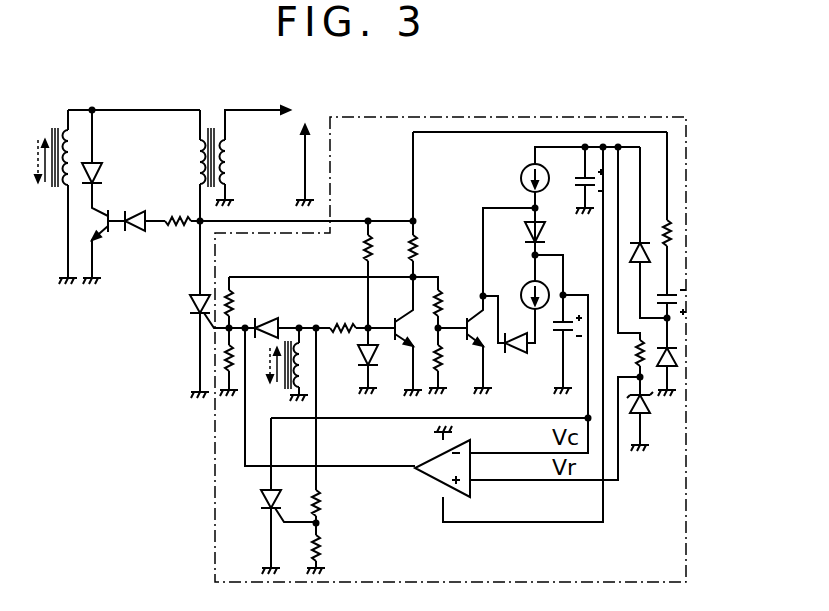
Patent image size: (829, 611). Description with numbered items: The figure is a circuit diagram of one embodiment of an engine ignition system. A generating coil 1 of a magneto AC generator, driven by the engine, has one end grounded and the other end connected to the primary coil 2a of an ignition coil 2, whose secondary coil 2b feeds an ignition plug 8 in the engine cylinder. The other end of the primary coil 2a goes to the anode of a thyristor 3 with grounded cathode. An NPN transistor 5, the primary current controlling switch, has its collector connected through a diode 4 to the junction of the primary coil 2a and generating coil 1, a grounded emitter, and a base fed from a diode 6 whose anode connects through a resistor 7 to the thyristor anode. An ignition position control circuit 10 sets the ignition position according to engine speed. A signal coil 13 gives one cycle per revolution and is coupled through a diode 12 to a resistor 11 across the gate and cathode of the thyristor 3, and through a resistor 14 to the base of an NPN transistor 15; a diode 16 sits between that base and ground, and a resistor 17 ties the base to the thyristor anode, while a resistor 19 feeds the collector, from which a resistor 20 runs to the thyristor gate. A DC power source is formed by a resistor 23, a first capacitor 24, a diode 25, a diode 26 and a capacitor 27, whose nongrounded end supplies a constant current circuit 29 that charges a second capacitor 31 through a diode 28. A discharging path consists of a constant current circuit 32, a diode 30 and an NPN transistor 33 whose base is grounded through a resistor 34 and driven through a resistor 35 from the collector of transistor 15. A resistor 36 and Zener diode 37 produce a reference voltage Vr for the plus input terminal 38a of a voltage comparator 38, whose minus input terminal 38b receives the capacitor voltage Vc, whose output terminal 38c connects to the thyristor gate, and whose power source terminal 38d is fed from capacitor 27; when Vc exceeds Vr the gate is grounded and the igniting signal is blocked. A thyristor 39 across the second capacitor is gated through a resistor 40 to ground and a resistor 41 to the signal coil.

The generating coil 1 is at (60, 130).
The ignition coil 2 is at (213, 136).
The primary coil 2a is at (200, 157).
The secondary coil 2b is at (232, 165).
The thyristor 3 is at (193, 300).
The diode 4 is at (102, 172).
The NPN transistor 5 is at (104, 212).
The diode 6 is at (134, 228).
The resistor 7 is at (176, 226).
The ignition plug 8 is at (305, 118).
The ignition position control circuit 10 is at (686, 492).
The resistor 11 is at (224, 362).
The diode 12 is at (278, 324).
The signal coil 13 is at (297, 385).
The resistor 14 is at (343, 322).
The NPN transistor 15 is at (405, 312).
The diode 16 is at (362, 360).
The resistor 17 is at (360, 240).
The resistor 19 is at (421, 246).
The resistor 20 is at (235, 302).
The resistor 23 is at (675, 230).
The first capacitor 24 is at (684, 300).
The diode 25 is at (677, 360).
The diode 26 is at (650, 254).
The capacitor 27 is at (555, 212).
The diode 28 is at (547, 234).
The constant current circuit 29 is at (522, 172).
The diode 30 is at (518, 338).
The second capacitor 31 is at (556, 334).
The constant current circuit 32 is at (520, 300).
The NPN transistor 33 is at (502, 326).
The resistor 34 is at (445, 356).
The resistor 35 is at (446, 300).
The resistor 36 is at (648, 352).
The Zener diode 37 is at (648, 406).
The voltage comparator 38 is at (430, 495).
The plus input terminal 38a is at (500, 482).
The minus input terminal 38b is at (496, 453).
The output terminal 38c is at (336, 470).
The power source terminal 38d is at (440, 528).
The thyristor 39 is at (262, 510).
The resistor 40 is at (322, 548).
The resistor 41 is at (322, 502).